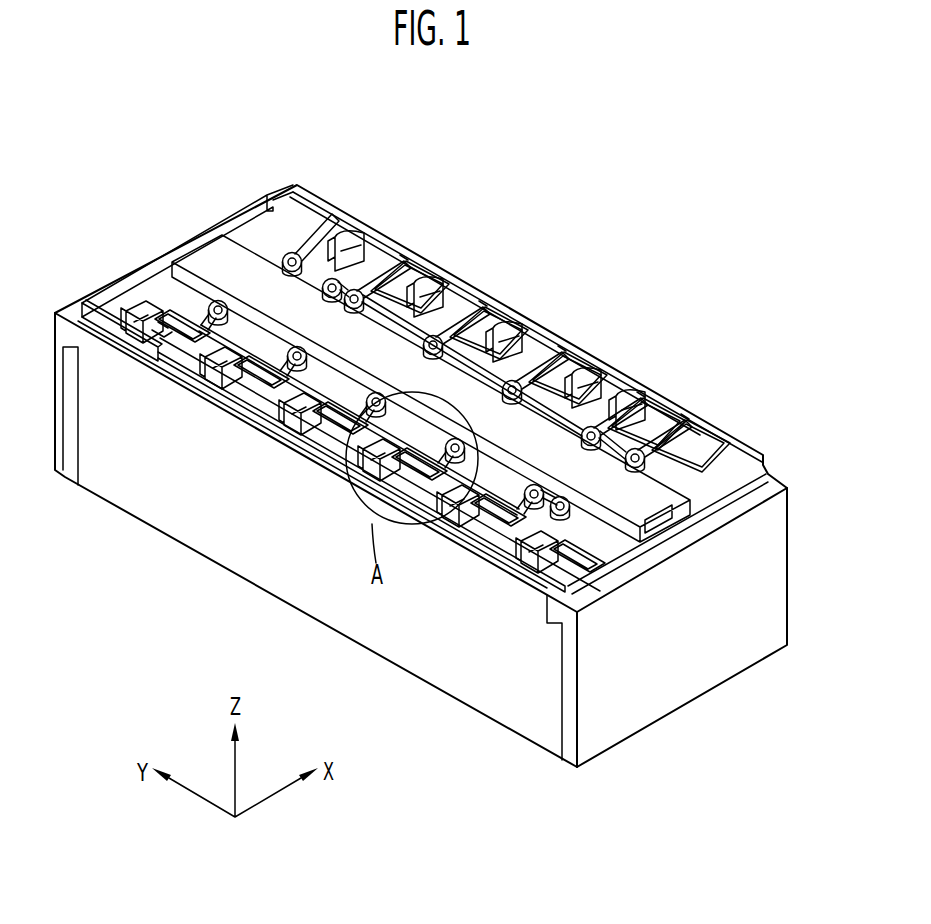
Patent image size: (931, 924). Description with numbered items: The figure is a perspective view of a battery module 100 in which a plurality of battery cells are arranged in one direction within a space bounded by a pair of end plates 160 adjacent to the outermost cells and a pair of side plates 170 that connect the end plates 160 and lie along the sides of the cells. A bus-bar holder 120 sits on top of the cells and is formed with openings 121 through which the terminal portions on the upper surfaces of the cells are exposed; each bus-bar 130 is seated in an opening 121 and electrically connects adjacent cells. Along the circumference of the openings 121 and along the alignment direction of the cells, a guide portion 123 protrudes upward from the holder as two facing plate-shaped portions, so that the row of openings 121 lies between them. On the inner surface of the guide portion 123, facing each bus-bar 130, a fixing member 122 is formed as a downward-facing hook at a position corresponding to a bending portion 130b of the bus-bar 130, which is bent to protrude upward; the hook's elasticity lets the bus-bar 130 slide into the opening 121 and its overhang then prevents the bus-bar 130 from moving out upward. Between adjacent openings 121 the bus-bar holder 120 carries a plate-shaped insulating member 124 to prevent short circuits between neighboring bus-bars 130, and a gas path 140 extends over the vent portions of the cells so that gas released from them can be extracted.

The battery module 100 is at (636, 207).
The bus-bar holder 120 is at (495, 388).
The opening 121 is at (178, 318).
The fixing member 122 is at (213, 354).
The guide portion 123 is at (310, 403).
The insulating member 124 is at (153, 347).
The bus-bar 130 is at (102, 300).
The bending portion 130b is at (160, 330).
The gas path 140 is at (550, 447).
The end plate 160 is at (778, 595).
The side plate 170 is at (383, 640).